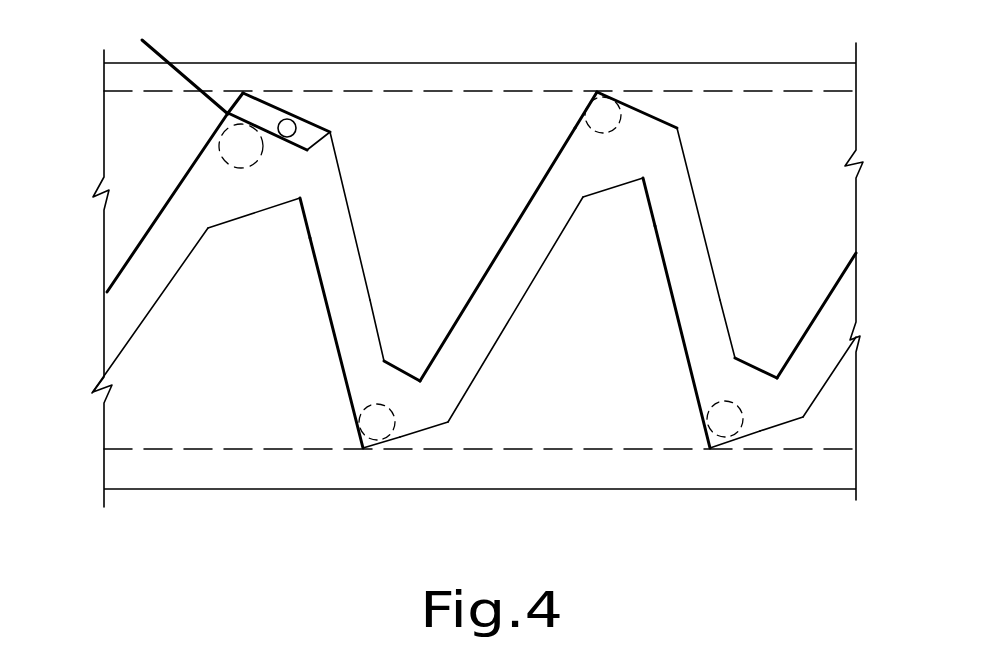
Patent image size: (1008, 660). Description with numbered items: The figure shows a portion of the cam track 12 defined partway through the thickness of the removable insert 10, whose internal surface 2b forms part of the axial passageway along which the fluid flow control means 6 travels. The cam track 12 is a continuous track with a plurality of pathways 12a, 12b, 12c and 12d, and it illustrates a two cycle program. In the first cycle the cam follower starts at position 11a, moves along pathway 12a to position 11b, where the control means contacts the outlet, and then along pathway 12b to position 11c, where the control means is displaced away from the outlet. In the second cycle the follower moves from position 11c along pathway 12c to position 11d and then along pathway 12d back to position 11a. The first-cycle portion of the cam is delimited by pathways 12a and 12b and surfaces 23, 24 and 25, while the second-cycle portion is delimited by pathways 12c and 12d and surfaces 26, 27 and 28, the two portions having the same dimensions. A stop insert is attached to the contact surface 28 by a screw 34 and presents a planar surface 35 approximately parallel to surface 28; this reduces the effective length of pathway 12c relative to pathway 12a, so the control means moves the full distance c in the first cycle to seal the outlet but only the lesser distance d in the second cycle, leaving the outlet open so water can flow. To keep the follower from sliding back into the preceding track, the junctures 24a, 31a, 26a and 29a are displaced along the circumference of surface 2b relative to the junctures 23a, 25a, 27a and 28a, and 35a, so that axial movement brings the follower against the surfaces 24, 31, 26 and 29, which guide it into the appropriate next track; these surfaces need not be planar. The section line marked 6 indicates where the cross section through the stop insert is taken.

The insert 10 is at (782, 62).
The internal surface 2b is at (813, 116).
The fluid flow control means 6 is at (252, 14).
The cam track 12 is at (712, 212).
The cam track pathway 12a is at (700, 270).
The cam track pathway 12b is at (520, 270).
The cam track pathway 12c is at (360, 288).
The cam track pathway 12d is at (142, 273).
The cam follower position 11a is at (708, 408).
The cam follower position 11b is at (623, 128).
The cam follower position 11c is at (362, 394).
The cam follower position 11d is at (240, 163).
The surface 23 is at (758, 436).
The juncture 23a is at (710, 450).
The surface 24 is at (750, 367).
The juncture 24a is at (777, 378).
The surface 25 is at (646, 110).
The juncture 25a is at (596, 91).
The surface 26 is at (410, 378).
The juncture 26a is at (418, 385).
The surface 27 is at (403, 442).
The juncture 27a is at (364, 450).
The contact surface 28 is at (267, 92).
The juncture 28a is at (245, 92).
The surface 29 is at (230, 226).
The juncture 29a is at (298, 203).
The surface 31 is at (613, 190).
The juncture 31a is at (643, 179).
The screw 34 is at (288, 119).
The planar surface 35 is at (318, 135).
The juncture 35a is at (159, 61).
The pathway length c is at (491, 437).
The reduced distance d is at (225, 118).